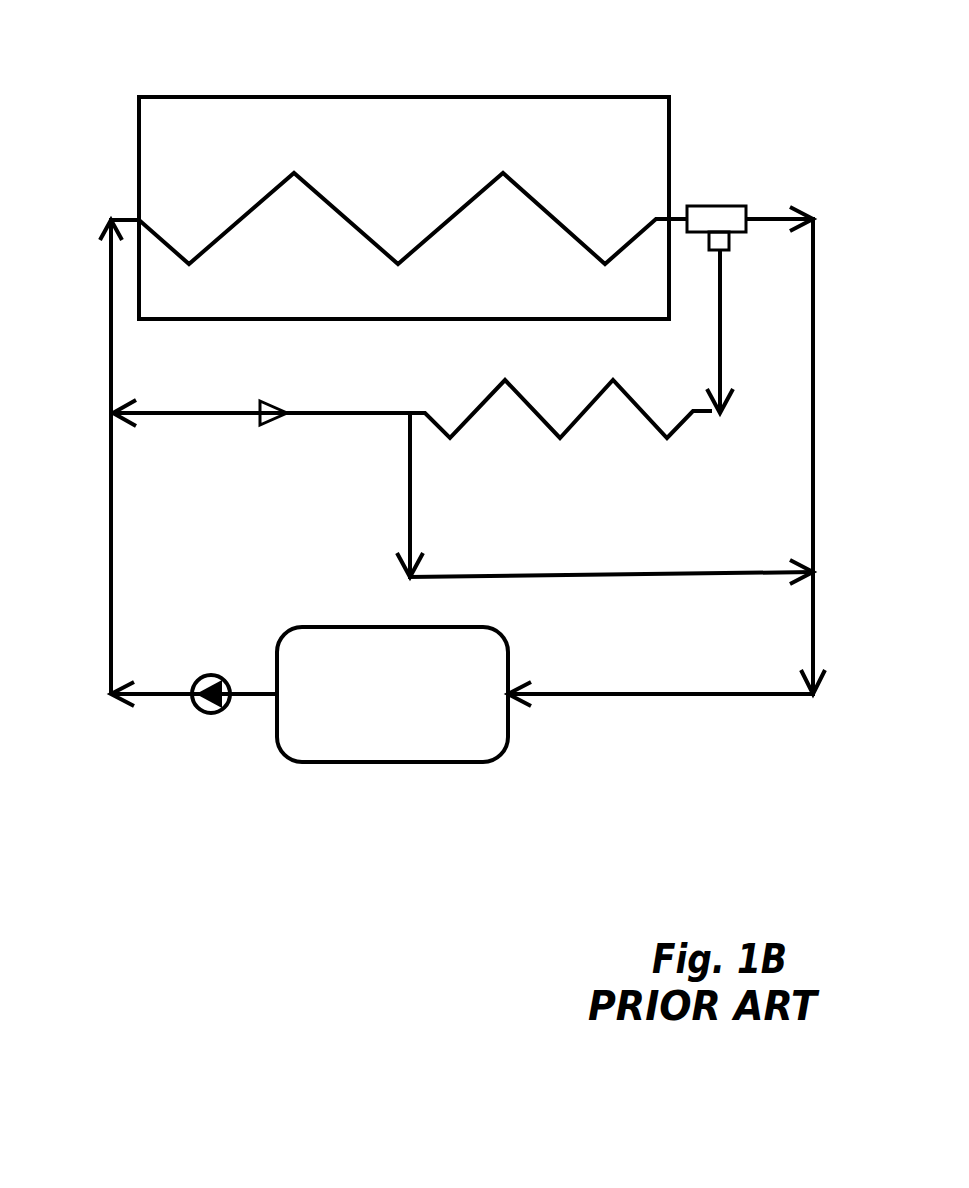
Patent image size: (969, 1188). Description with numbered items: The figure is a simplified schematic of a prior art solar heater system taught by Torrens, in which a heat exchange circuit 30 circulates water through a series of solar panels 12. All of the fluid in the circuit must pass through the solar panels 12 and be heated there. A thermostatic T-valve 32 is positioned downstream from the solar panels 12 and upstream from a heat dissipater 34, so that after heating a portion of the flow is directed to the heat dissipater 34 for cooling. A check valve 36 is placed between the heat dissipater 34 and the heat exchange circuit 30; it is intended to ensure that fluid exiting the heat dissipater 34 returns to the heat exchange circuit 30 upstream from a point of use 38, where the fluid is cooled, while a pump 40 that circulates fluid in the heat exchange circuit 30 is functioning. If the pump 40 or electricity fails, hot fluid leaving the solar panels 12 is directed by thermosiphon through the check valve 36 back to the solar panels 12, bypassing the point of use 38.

The solar panels 12 is at (435, 97).
The heat exchange circuit 30 is at (814, 285).
The thermostatic T-valve 32 is at (715, 206).
The heat dissipater 34 is at (570, 428).
The check valve 36 is at (265, 416).
The point of use 38 is at (392, 694).
The pump 40 is at (209, 712).